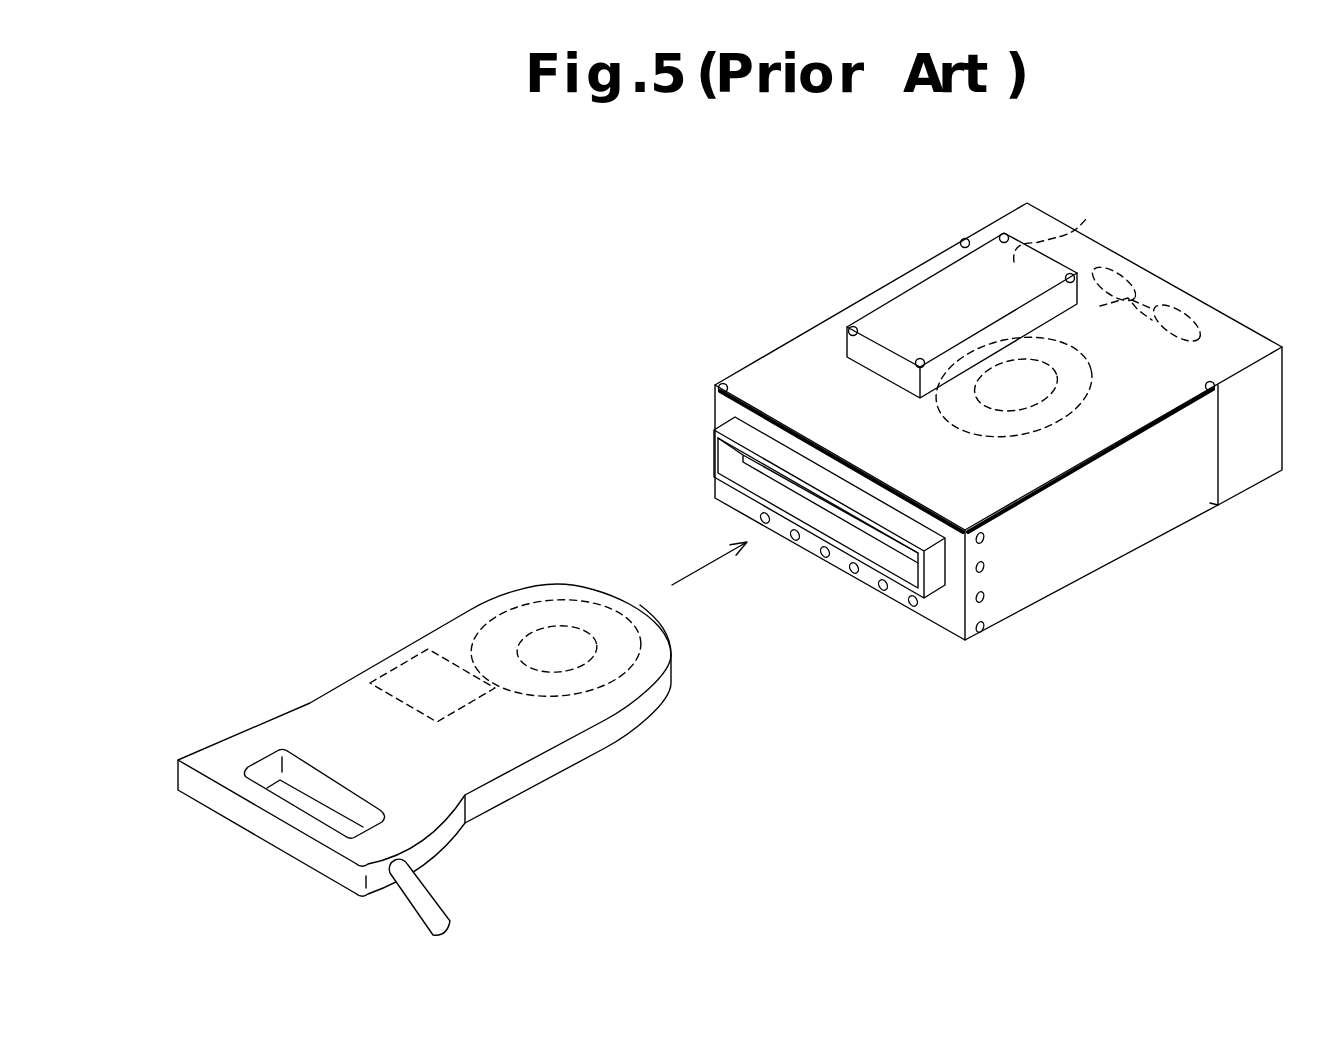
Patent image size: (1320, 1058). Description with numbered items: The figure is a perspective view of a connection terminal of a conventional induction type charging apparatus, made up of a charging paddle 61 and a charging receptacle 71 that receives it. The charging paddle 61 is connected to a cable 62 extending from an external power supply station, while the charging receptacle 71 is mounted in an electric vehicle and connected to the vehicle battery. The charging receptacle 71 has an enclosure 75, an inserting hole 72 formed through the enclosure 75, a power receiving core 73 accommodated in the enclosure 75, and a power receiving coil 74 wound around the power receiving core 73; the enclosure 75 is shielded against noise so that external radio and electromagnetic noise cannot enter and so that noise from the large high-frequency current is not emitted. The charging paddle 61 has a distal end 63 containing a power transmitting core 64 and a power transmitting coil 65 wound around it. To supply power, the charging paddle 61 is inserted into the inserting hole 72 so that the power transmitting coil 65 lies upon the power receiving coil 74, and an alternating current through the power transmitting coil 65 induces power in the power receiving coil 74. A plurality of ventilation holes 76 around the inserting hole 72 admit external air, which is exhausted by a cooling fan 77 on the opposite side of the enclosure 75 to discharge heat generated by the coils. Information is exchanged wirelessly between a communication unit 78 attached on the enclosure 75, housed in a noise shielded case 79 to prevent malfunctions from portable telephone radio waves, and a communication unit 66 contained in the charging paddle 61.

The charging paddle 61 is at (270, 693).
The cable 62 is at (424, 902).
The distal end 63 is at (563, 727).
The power transmitting core 64 is at (540, 637).
The power transmitting coil 65 is at (674, 655).
The communication unit 66 is at (400, 667).
The charging receptacle 71 is at (769, 321).
The inserting hole 72 is at (724, 455).
The power receiving core 73 is at (1090, 405).
The power receiving coil 74 is at (1090, 371).
The enclosure 75 is at (1107, 547).
The ventilation holes 76 is at (913, 606).
The cooling fan 77 is at (1195, 308).
The communication unit 78 is at (1065, 222).
The noise shielded case 79 is at (902, 312).